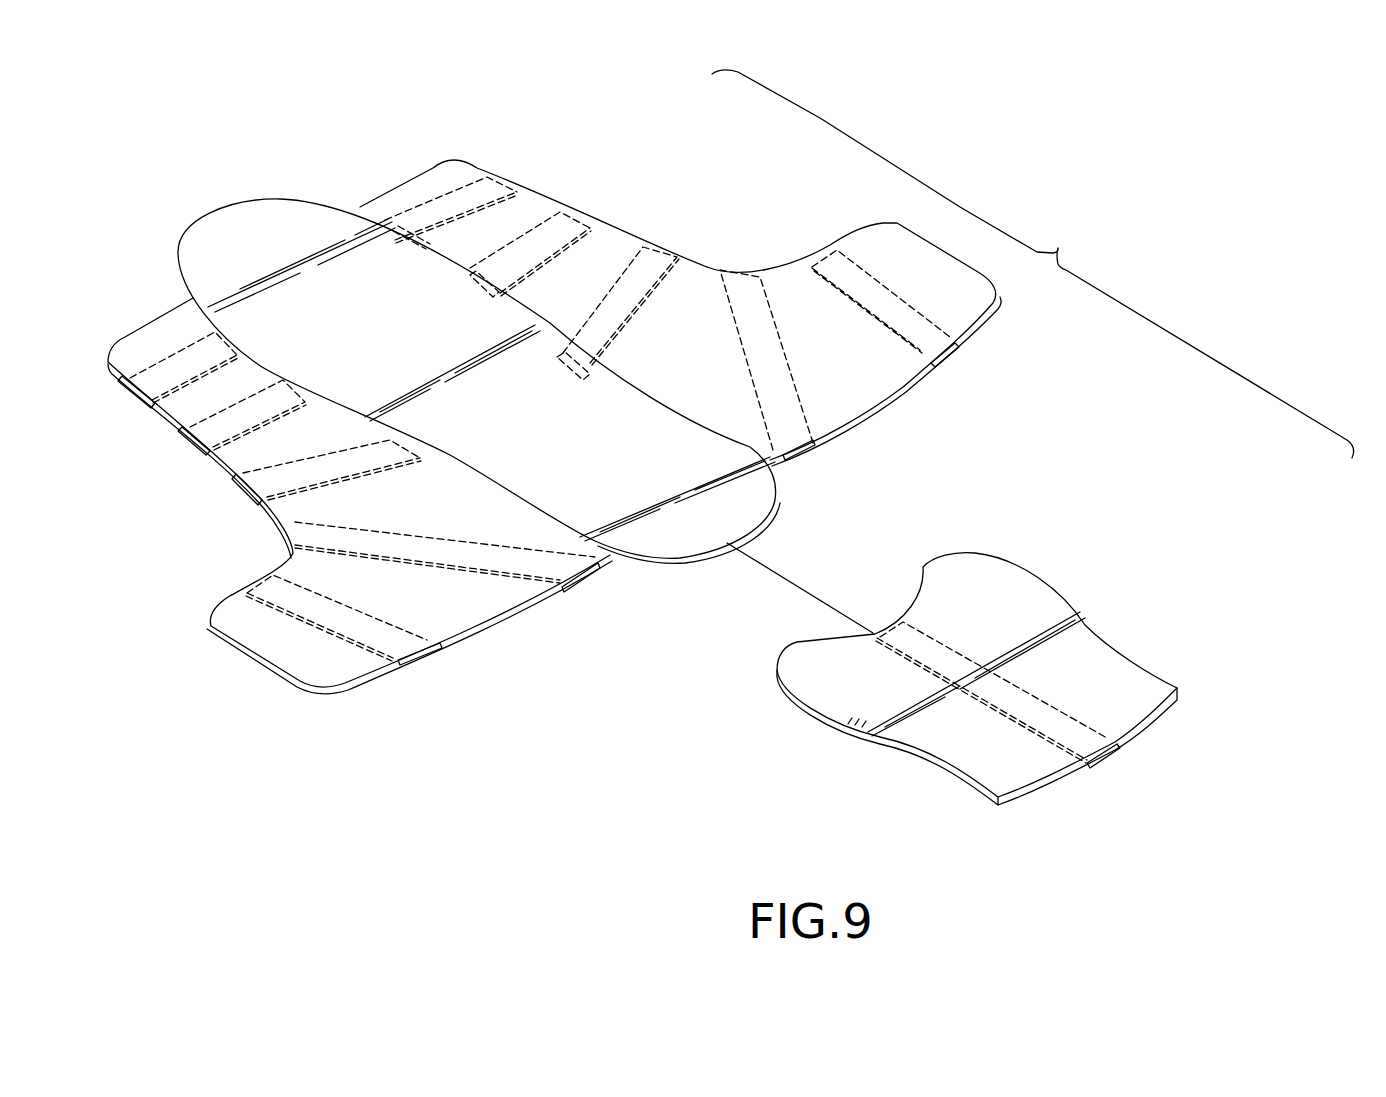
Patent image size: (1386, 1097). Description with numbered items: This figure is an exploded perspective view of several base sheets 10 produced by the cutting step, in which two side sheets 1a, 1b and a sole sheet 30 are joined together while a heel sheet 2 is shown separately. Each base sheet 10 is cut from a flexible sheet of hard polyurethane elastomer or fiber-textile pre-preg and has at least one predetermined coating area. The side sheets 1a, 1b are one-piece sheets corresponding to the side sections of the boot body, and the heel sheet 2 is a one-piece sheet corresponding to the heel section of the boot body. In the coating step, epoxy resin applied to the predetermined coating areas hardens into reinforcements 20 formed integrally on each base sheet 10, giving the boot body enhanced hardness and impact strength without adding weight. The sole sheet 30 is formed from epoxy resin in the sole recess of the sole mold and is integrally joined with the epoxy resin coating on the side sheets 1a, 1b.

The side sheet 1a is at (515, 641).
The side sheet 1b is at (924, 426).
The heel sheet 2 is at (1048, 562).
The base sheet 10 is at (307, 570).
The reinforcement 20 is at (950, 366).
The sole sheet 30 is at (232, 228).